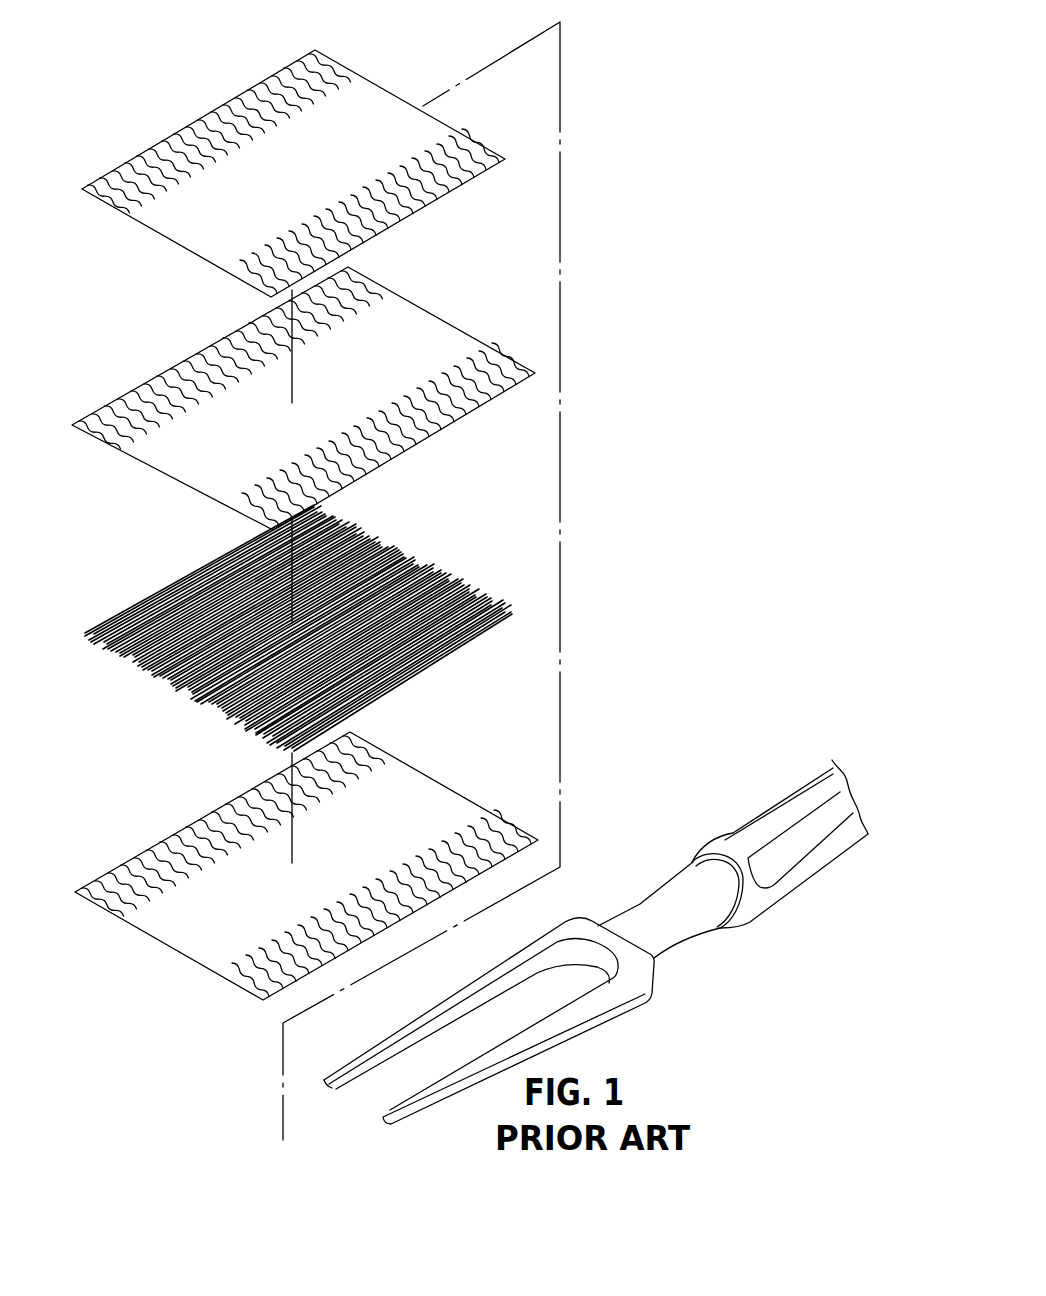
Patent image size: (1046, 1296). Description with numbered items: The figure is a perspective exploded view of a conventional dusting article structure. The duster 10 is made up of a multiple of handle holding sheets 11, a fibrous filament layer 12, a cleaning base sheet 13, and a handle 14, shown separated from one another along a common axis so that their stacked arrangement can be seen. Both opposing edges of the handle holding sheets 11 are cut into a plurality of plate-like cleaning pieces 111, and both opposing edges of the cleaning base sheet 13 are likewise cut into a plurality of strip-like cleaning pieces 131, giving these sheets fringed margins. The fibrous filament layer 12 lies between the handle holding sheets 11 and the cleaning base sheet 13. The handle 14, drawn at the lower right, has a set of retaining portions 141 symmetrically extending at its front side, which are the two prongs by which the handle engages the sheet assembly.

The duster 10 is at (617, 485).
The handle holding sheets 11 is at (306, 266).
The plate-like cleaning pieces 111 is at (493, 162).
The fibrous filament layer 12 is at (417, 557).
The cleaning base sheet 13 is at (306, 884).
The strip-like cleaning pieces 131 is at (140, 867).
The handle 14 is at (750, 925).
The retaining portions 141 is at (567, 1023).